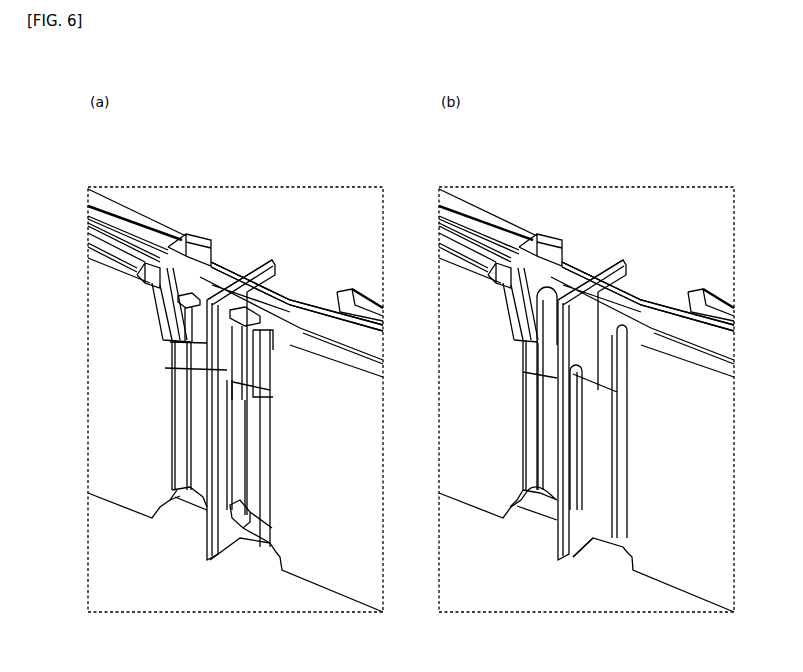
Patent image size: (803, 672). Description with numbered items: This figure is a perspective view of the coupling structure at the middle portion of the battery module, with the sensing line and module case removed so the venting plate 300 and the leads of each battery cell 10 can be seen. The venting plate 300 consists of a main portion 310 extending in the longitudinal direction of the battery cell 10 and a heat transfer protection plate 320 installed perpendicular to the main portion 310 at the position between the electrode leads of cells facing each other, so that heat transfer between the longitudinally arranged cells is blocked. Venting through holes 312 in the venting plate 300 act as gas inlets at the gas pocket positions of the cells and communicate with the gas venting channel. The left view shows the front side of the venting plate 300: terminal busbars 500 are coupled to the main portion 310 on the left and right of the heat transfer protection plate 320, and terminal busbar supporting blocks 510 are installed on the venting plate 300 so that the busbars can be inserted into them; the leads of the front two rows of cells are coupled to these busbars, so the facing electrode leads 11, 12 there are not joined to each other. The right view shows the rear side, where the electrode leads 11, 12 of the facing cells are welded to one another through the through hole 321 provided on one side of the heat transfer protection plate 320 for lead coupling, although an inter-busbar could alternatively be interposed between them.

The battery cell 10 is at (153, 233).
The electrode lead 11 is at (200, 508).
The electrode lead 12 is at (238, 530).
The venting plate 300 is at (310, 146).
The main portion 310 is at (292, 338).
The venting through hole 312 is at (543, 288).
The heat transfer protection plate 320 is at (237, 300).
The through hole 321 is at (577, 513).
The terminal busbar 500 is at (172, 355).
The terminal busbar supporting block 510 is at (262, 318).